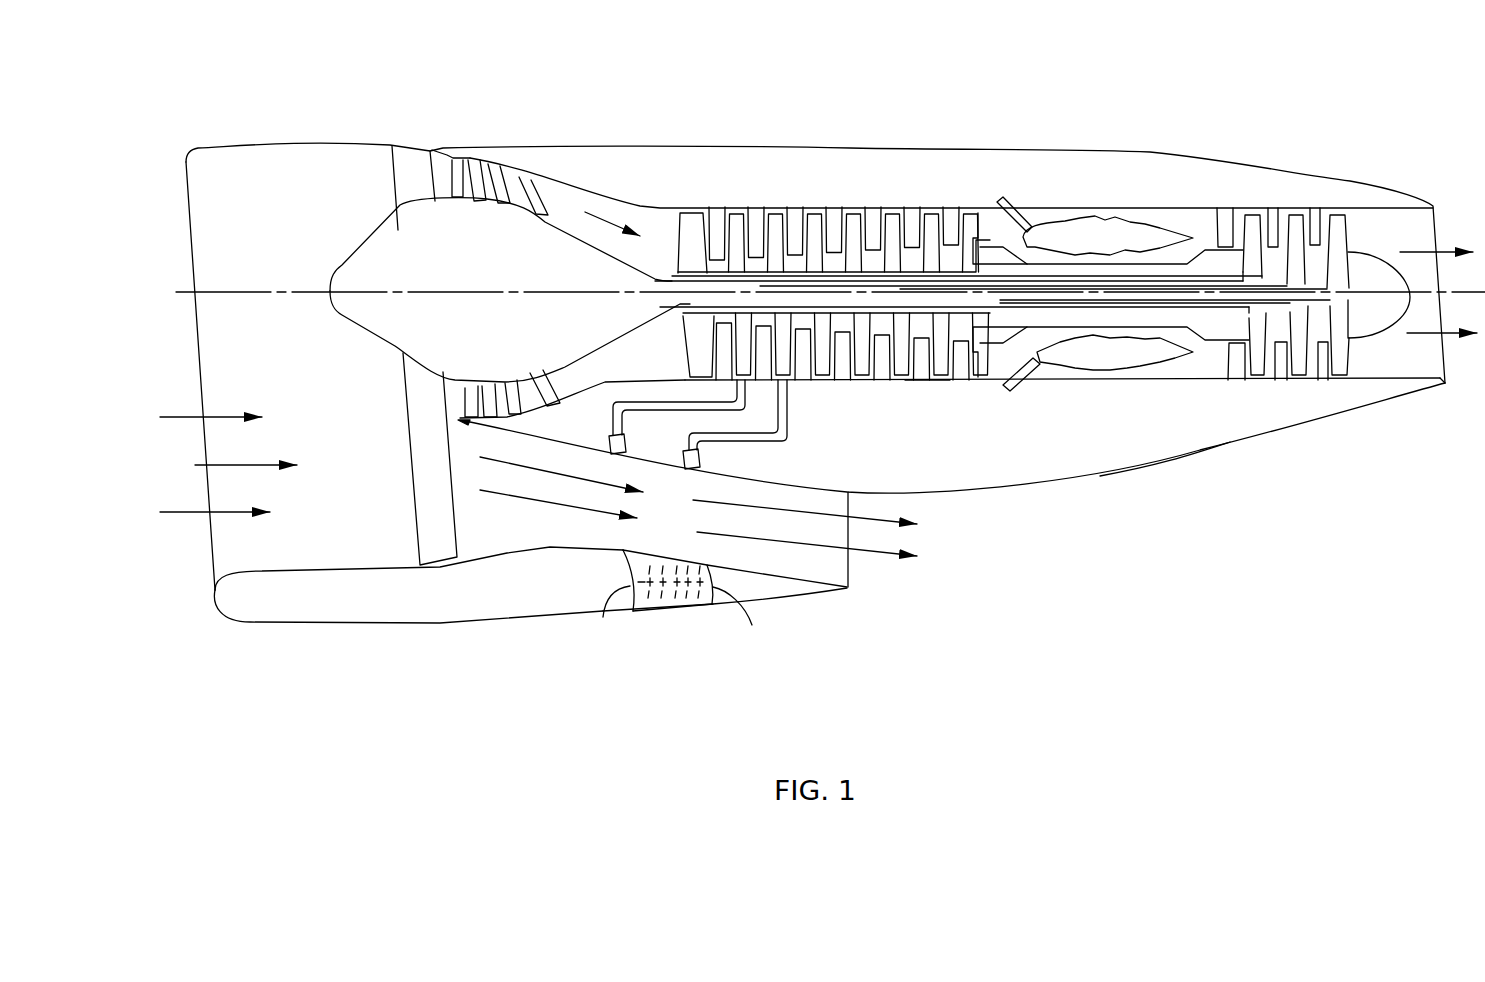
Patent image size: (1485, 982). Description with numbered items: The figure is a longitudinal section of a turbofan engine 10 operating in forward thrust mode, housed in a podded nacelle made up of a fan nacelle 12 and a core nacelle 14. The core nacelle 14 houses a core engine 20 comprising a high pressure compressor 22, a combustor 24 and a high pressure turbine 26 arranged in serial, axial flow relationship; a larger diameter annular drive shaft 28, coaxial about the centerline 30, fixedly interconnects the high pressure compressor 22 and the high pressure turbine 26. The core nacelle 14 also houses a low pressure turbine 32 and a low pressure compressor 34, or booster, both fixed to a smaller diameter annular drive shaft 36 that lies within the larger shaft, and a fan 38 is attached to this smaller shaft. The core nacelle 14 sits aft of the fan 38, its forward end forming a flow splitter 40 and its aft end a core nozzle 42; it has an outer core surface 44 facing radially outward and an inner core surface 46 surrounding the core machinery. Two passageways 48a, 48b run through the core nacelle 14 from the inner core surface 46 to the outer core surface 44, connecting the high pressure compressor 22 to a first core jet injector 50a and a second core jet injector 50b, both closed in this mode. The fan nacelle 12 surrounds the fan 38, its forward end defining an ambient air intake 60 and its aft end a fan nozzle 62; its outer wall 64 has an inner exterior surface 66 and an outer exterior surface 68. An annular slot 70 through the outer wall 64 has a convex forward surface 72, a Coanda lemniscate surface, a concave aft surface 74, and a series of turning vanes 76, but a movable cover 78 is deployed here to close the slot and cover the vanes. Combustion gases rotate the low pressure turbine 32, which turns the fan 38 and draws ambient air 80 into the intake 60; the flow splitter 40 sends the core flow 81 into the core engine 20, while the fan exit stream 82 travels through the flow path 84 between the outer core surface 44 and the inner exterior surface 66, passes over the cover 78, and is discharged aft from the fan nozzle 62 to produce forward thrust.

The turbofan engine 10 is at (1088, 78).
The fan nacelle 12 is at (258, 650).
The core nacelle 14 is at (1356, 420).
The core engine 20 is at (997, 240).
The high pressure compressor 22 is at (820, 238).
The combustor 24 is at (1129, 236).
The high pressure turbine 26 is at (1250, 227).
The larger diameter annular drive shaft 28 is at (1208, 272).
The centerline 30 is at (176, 292).
The low pressure turbine 32 is at (1302, 360).
The low pressure compressor 34 is at (483, 160).
The smaller diameter annular drive shaft 36 is at (1083, 302).
The fan 38 is at (435, 543).
The flow splitter 40 is at (462, 421).
The core nozzle 42 is at (1450, 387).
The outer core surface 44 is at (1185, 456).
The inner core surface 46 is at (927, 383).
The passageway 48a is at (735, 408).
The passageway 48b is at (789, 414).
The first core jet injector 50a is at (607, 443).
The second core jet injector 50b is at (700, 458).
The ambient air intake 60 is at (218, 236).
The fan nozzle 62 is at (853, 567).
The outer wall 64 is at (447, 613).
The inner exterior surface 66 is at (552, 547).
The outer exterior surface 68 is at (543, 621).
The annular slot 70 is at (700, 628).
The convex forward surface 72 is at (630, 588).
The concave aft surface 74 is at (713, 588).
The turning vanes 76 is at (672, 596).
The movable cover 78 is at (637, 612).
The ambient air 80 is at (221, 464).
The core flow 81 is at (657, 347).
The fan exit stream 82 is at (698, 506).
The flow path 84 is at (801, 566).